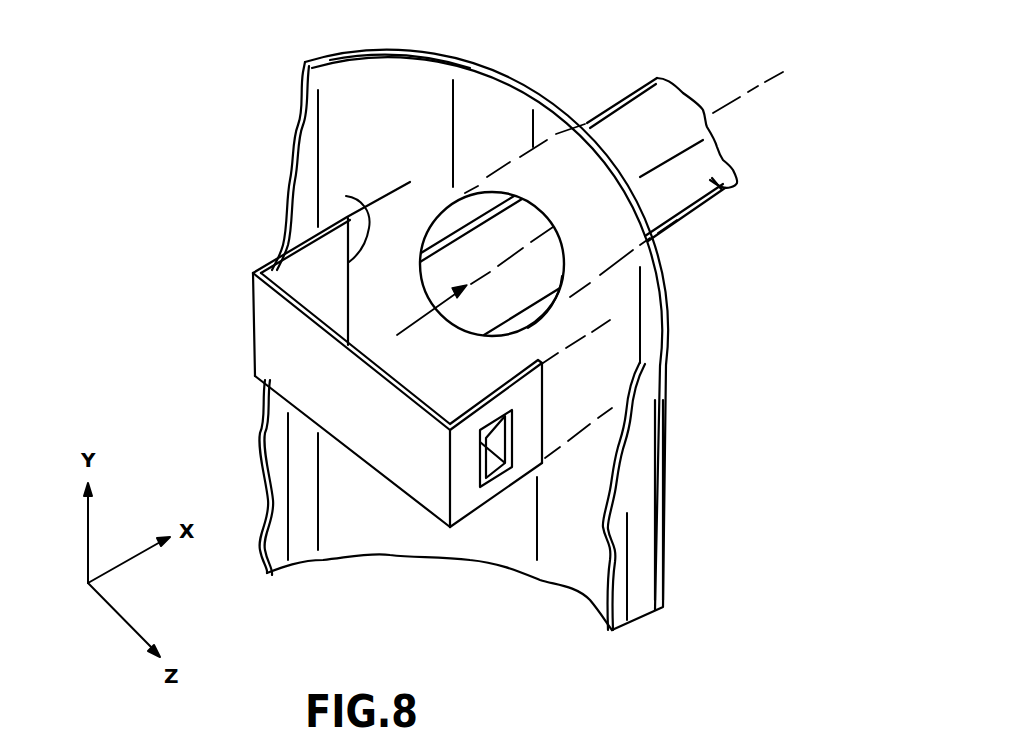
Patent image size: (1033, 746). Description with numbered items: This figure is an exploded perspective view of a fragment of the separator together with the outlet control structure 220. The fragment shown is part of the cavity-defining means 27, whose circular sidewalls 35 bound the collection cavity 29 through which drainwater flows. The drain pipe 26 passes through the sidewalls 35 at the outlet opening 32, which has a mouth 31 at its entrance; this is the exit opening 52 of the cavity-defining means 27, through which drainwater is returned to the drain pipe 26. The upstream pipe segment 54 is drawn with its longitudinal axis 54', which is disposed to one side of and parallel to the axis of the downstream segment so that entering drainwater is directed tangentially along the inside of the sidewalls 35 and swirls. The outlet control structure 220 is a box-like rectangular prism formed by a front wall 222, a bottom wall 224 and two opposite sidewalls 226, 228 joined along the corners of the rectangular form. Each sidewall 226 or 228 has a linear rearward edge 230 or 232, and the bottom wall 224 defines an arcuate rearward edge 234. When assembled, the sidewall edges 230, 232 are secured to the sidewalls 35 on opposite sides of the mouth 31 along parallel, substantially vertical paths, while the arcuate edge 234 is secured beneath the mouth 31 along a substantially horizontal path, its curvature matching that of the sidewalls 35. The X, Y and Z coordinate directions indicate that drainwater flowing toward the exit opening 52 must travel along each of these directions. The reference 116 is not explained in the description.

The cavity-defining means 27 is at (665, 558).
The collection cavity 29 is at (643, 505).
The circular sidewalls 35 is at (367, 87).
The mouth 31 is at (452, 195).
The aperture wall 116 is at (418, 250).
The drain pipe 26 is at (722, 188).
The exit opening 52 is at (541, 219).
The outlet opening 32 is at (550, 252).
The upstream pipe segment 54 is at (537, 182).
The longitudinal axis of the upstream pipe segment 54' is at (748, 66).
The outlet control structure 220 is at (284, 339).
The sidewall 226 is at (252, 286).
The linear rearward edge 230 is at (346, 196).
The front wall 222 is at (290, 371).
The bottom wall 224 is at (420, 500).
The sidewall 228 is at (468, 498).
The linear rearward edge 232 is at (543, 422).
The arcuate rearward edge 234 is at (542, 435).